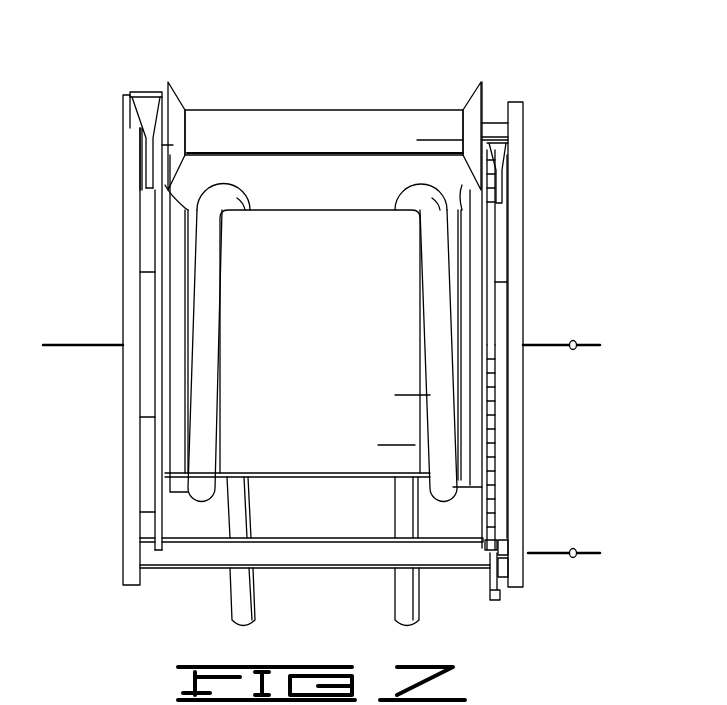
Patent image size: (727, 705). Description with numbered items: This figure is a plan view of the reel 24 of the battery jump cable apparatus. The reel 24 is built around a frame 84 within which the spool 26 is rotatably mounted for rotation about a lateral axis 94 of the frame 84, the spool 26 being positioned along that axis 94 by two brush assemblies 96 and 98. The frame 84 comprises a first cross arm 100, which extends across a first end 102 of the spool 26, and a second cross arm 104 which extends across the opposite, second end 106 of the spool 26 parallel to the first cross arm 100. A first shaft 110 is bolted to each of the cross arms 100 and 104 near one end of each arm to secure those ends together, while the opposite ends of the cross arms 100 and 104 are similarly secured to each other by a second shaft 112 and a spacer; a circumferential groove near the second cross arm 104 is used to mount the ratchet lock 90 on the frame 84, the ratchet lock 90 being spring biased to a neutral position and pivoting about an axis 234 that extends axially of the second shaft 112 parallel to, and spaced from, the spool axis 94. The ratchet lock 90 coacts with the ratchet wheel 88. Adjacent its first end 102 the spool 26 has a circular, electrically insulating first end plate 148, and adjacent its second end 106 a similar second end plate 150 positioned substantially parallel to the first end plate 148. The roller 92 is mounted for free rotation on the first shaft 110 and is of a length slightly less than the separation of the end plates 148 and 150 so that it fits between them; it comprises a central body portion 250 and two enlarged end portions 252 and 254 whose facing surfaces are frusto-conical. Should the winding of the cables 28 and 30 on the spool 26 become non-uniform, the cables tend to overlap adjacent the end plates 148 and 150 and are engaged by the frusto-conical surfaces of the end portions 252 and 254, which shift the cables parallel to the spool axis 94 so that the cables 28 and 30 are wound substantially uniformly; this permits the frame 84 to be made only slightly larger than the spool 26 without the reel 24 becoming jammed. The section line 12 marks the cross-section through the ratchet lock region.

The section line 12- 12 is at (503, 528).
The reel 24 is at (572, 97).
The spool 26 is at (292, 207).
The cable 28 is at (233, 608).
The cable 30 is at (397, 608).
The frame 84 is at (524, 215).
The ratchet wheel 88 is at (493, 472).
The ratchet lock 90 is at (492, 575).
The roller 92 is at (375, 108).
The lateral axis 94 is at (573, 341).
The brush assembly 96 is at (150, 287).
The brush assembly 98 is at (500, 295).
The first cross arm 100 is at (130, 197).
The first end 102 is at (153, 503).
The second cross arm 104 is at (518, 382).
The second end 106 is at (493, 440).
The first shaft 110 is at (495, 125).
The second shaft 112 is at (328, 553).
The first end plate 148 is at (157, 385).
The second end plate 150 is at (488, 340).
The axis 234 is at (573, 549).
The central body portion 250 is at (236, 120).
The enlarged end portion 252 is at (176, 100).
The enlarged end portion 254 is at (475, 92).